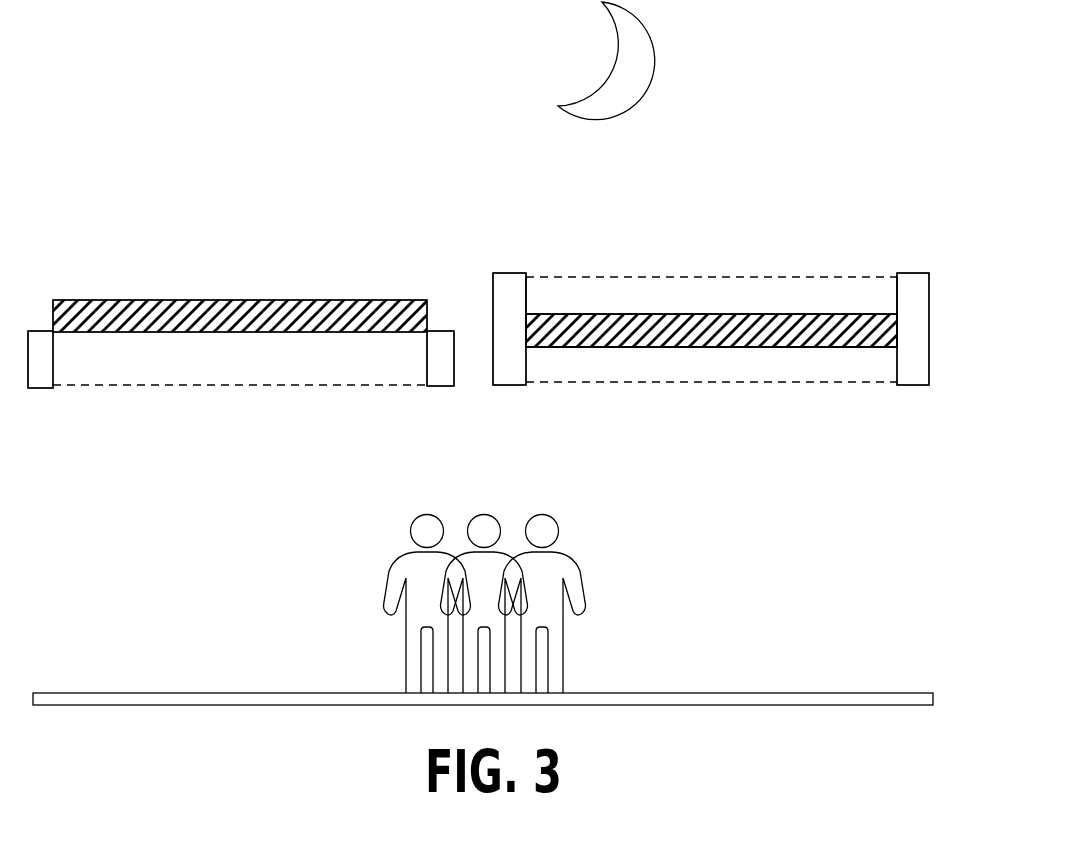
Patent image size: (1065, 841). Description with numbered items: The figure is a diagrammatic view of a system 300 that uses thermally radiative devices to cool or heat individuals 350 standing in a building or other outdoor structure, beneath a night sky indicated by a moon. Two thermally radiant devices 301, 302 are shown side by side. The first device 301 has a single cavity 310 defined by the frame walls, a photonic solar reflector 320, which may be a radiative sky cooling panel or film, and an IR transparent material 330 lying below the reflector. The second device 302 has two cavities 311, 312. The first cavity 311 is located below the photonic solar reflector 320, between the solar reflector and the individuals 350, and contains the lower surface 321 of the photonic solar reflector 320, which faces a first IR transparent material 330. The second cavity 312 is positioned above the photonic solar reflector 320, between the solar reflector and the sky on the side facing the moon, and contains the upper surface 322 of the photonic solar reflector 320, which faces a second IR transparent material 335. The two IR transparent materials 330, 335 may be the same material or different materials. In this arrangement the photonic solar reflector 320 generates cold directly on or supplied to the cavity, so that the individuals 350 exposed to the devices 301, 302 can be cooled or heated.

The system 300 is at (177, 166).
The thermally radiant device 301 is at (195, 300).
The thermally radiant device 302 is at (526, 275).
The cavity 310 is at (240, 362).
The first cavity 311 is at (711, 363).
The second cavity 312 is at (711, 296).
The photonic solar reflector 320 is at (252, 300).
The lower surface 321 is at (708, 347).
The upper surface 322 is at (732, 314).
The IR transparent material 330 is at (143, 385).
The second IR transparent material 335 is at (817, 277).
The individuals 350 is at (560, 570).